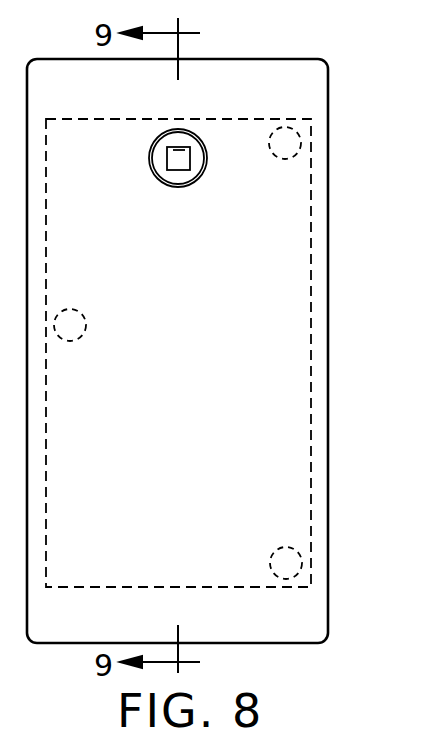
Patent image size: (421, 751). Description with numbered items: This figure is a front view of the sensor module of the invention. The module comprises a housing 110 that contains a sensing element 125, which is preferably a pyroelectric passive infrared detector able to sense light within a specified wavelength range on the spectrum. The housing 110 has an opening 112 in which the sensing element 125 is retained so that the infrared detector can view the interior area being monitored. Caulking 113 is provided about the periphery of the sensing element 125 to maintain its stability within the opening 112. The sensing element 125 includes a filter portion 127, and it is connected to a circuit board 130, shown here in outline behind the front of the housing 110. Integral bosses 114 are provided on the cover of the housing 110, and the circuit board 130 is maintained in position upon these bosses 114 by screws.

The housing 110 is at (314, 74).
The circuit board 130 is at (288, 255).
The integral bosses 114 is at (72, 312).
The caulking 113 is at (172, 187).
The opening 112 is at (198, 176).
The sensing element 125 is at (160, 152).
The filter portion 127 is at (181, 150).